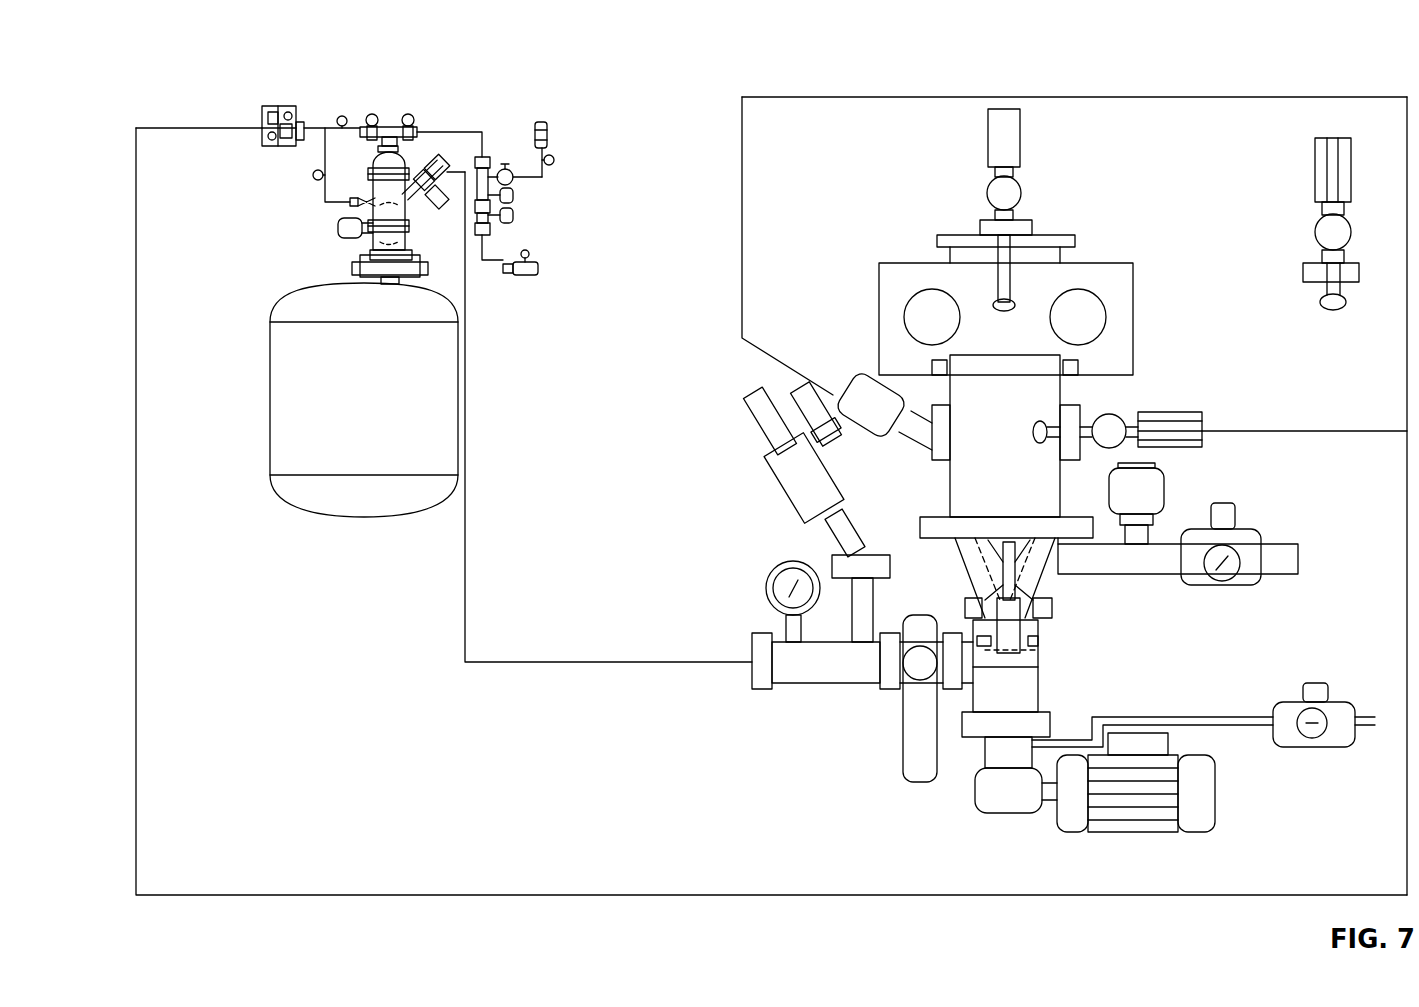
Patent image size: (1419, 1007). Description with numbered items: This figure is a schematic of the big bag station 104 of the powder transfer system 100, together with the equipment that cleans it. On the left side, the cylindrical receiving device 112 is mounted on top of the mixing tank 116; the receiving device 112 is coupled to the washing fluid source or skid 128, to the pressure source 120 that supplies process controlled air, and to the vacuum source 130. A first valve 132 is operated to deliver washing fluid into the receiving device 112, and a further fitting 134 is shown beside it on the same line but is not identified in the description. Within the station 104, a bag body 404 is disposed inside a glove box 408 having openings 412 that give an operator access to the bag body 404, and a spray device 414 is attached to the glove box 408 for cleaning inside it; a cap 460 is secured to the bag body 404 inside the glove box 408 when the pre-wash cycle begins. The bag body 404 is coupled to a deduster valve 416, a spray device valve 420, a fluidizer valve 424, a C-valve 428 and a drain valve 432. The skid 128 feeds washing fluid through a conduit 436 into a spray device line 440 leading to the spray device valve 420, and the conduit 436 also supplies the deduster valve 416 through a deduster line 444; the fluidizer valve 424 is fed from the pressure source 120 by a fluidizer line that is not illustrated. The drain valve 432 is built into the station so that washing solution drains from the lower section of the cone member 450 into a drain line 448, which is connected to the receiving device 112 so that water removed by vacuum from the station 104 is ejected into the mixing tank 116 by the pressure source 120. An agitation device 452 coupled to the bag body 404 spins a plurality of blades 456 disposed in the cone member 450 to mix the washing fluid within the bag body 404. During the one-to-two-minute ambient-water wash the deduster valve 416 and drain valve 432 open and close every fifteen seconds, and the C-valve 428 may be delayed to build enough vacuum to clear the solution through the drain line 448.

The powder transfer system 100 is at (208, 78).
The big bag station 104 is at (916, 86).
The cylindrical receiving device 112 is at (423, 150).
The mixing tank 116 is at (245, 395).
The pressure source 120 is at (548, 134).
The washing fluid source 128 is at (262, 136).
The vacuum source 130 is at (522, 276).
The first valve 132 is at (370, 114).
The fitting 134 is at (409, 114).
The bag body 404 is at (1052, 390).
The glove box 408 is at (1128, 282).
The openings 412 is at (905, 298).
The spray device 414 is at (1022, 142).
The deduster valve 416 is at (870, 378).
The spray device valve 420 is at (1110, 418).
The fluidizer valve 424 is at (1165, 492).
The C-valve 428 is at (912, 706).
The drain valve 432 is at (1045, 635).
The conduit 436 is at (495, 893).
The spray device line 440 is at (1357, 430).
The deduster line 444 is at (1225, 96).
The drain line 448 is at (530, 661).
The cone member 450 is at (955, 560).
The agitation device 452 is at (1135, 833).
The blades 456 is at (1010, 567).
The cap 460 is at (975, 295).